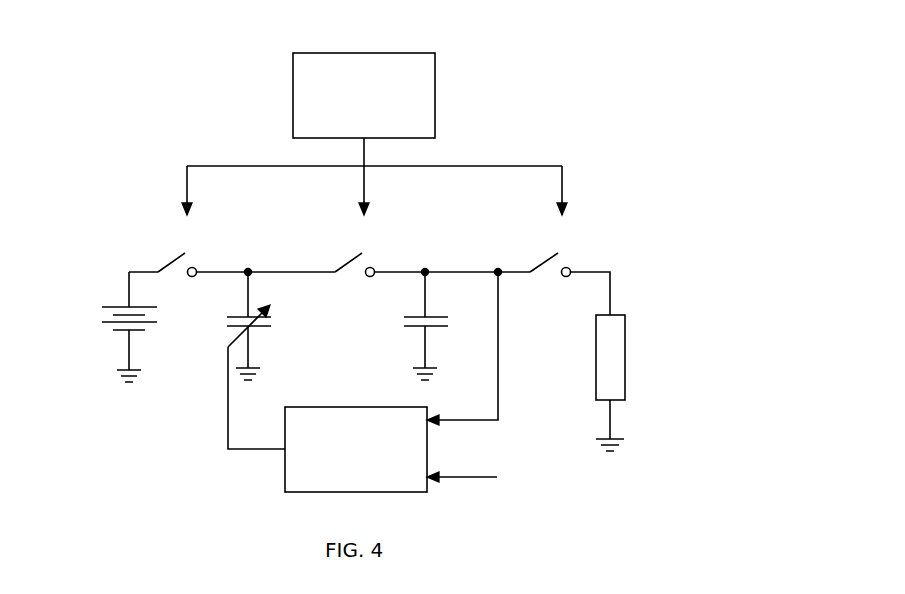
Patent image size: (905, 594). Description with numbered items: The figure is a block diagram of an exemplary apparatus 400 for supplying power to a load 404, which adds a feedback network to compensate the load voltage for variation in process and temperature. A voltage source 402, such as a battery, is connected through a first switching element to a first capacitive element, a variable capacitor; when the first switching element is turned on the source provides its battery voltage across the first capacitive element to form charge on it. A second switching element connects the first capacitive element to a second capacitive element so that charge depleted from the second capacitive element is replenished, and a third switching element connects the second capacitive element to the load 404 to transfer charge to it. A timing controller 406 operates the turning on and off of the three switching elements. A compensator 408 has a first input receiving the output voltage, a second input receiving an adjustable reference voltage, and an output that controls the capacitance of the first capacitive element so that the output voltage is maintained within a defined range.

The apparatus 400 is at (631, 86).
The voltage source 402 is at (117, 307).
The load 404 is at (622, 312).
The timing controller 406 is at (293, 95).
The compensator 408 is at (377, 407).